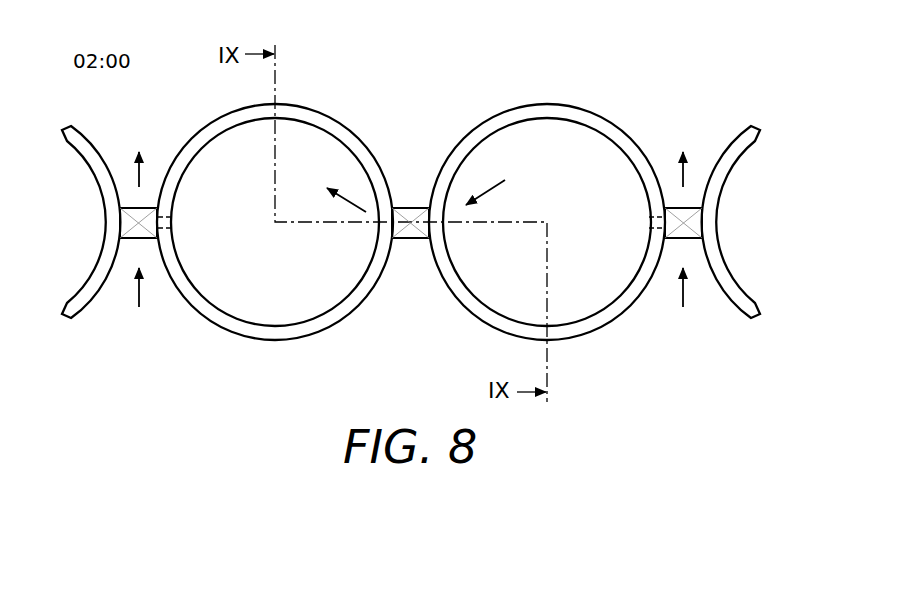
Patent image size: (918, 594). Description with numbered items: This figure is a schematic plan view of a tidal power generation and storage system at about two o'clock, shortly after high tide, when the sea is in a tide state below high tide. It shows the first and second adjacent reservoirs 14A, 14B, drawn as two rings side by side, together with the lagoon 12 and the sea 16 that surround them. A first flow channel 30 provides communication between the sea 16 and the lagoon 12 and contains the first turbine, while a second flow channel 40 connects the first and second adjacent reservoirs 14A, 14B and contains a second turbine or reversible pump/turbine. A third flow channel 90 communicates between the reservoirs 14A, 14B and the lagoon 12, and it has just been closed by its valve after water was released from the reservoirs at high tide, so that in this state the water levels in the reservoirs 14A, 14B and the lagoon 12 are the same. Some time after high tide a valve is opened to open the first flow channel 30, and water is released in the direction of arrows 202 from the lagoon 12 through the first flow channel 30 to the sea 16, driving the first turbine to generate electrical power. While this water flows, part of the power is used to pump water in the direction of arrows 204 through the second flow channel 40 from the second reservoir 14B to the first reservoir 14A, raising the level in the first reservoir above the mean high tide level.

The first adjacent reservoir 14A is at (337, 119).
The second adjacent reservoir 14B is at (485, 119).
The first flow channel 30 is at (126, 207).
The second flow channel 40 is at (410, 240).
The third flow channel 90 is at (171, 213).
The arrows 202 is at (140, 163).
The arrows 204 is at (468, 200).
The sea 16 is at (698, 81).
The lagoon 12 is at (698, 389).